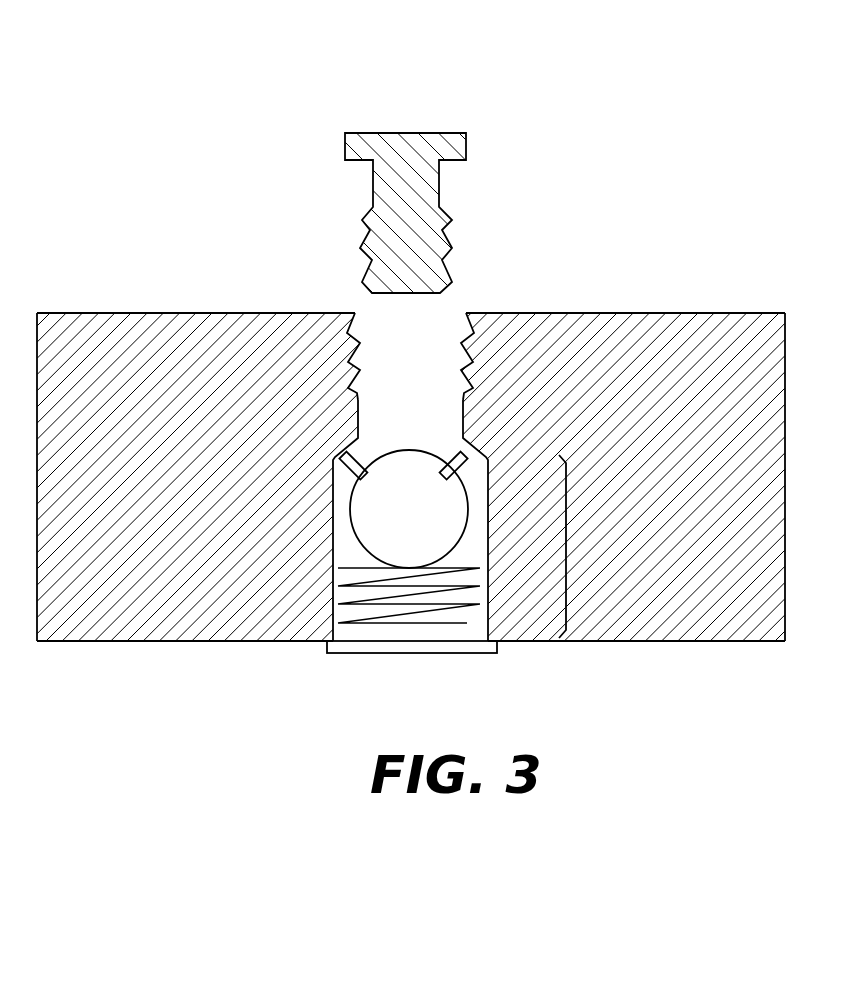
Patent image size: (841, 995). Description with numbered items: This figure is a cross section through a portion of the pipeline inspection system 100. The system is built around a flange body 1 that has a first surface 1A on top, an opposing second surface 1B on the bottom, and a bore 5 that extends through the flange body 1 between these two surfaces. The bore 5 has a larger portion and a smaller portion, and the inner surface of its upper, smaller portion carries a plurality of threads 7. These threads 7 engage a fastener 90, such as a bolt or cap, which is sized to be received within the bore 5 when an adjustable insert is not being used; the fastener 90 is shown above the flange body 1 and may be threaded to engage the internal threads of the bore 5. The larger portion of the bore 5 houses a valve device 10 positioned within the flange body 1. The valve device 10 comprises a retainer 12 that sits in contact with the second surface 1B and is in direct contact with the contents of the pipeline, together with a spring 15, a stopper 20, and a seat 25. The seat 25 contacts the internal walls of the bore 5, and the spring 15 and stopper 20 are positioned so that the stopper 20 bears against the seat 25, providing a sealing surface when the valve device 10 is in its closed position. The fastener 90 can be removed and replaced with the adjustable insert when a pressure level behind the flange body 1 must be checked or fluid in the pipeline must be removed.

The pipeline inspection system 100 is at (693, 78).
The flange body 1 is at (98, 368).
The first surface 1A is at (697, 314).
The second surface 1B is at (663, 643).
The bore 5 is at (415, 353).
The threads 7 is at (347, 383).
The valve device 10 is at (566, 545).
The retainer 12 is at (377, 653).
The spring 15 is at (468, 618).
The stopper 20 is at (421, 519).
The seat 25 is at (348, 457).
The fastener 90 is at (466, 146).